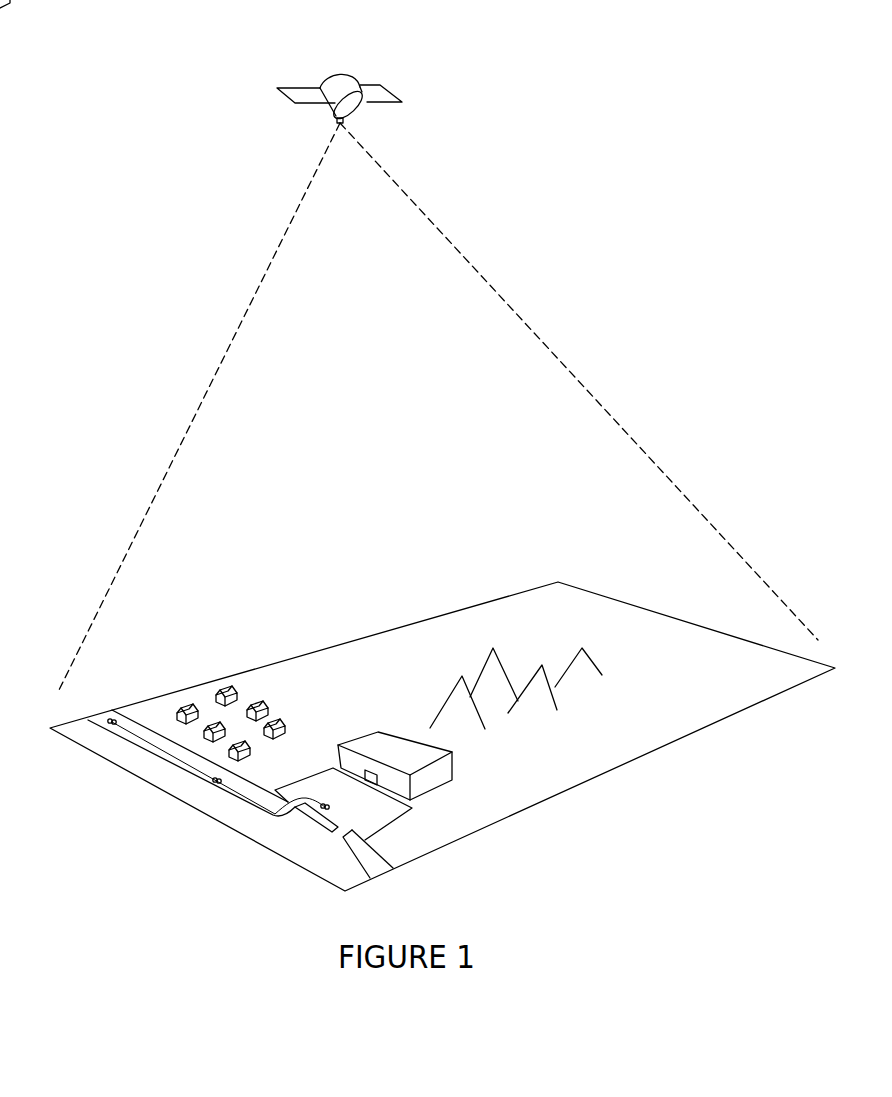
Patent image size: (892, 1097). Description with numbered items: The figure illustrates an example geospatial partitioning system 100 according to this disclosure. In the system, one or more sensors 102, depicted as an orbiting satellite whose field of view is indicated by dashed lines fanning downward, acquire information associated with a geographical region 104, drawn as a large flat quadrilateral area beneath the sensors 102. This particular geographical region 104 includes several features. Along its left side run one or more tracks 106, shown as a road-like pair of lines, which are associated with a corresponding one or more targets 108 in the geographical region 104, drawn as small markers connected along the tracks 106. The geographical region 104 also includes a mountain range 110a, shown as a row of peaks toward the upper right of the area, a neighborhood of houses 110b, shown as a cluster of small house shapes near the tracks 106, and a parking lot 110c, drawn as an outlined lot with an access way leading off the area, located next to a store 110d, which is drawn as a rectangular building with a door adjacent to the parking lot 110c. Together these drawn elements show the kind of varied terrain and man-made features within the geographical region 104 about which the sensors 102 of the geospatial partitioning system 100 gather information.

The geospatial partitioning system 100 is at (305, 50).
The sensors 102 is at (345, 121).
The geographical region 104 is at (674, 744).
The tracks 106 is at (165, 753).
The targets 108 is at (217, 783).
The mountain range 110a is at (593, 687).
The neighborhood of houses 110b is at (290, 732).
The parking lot 110c is at (395, 824).
The store 110d is at (362, 735).